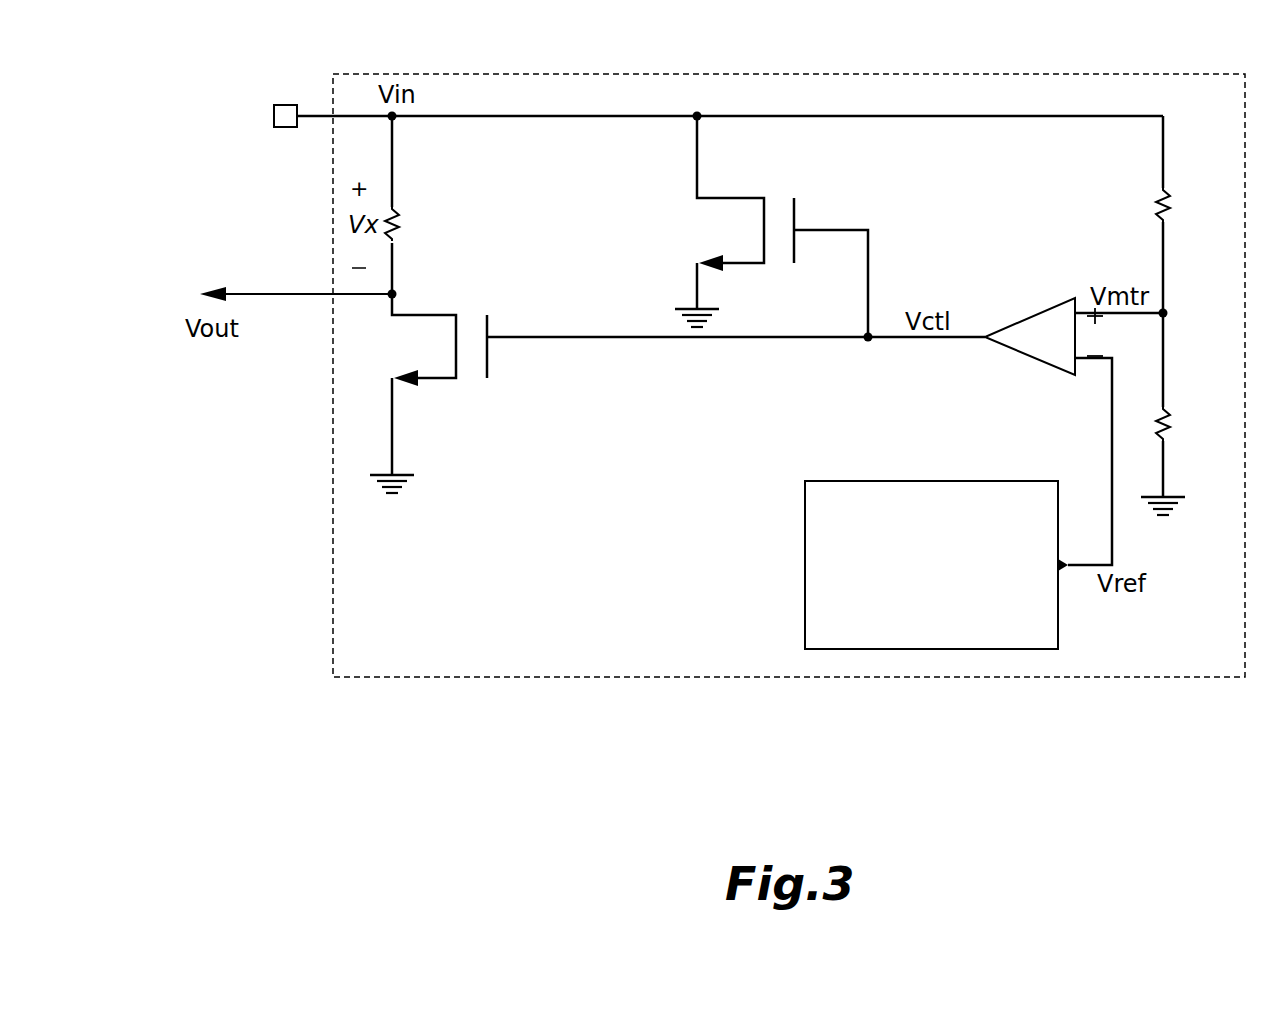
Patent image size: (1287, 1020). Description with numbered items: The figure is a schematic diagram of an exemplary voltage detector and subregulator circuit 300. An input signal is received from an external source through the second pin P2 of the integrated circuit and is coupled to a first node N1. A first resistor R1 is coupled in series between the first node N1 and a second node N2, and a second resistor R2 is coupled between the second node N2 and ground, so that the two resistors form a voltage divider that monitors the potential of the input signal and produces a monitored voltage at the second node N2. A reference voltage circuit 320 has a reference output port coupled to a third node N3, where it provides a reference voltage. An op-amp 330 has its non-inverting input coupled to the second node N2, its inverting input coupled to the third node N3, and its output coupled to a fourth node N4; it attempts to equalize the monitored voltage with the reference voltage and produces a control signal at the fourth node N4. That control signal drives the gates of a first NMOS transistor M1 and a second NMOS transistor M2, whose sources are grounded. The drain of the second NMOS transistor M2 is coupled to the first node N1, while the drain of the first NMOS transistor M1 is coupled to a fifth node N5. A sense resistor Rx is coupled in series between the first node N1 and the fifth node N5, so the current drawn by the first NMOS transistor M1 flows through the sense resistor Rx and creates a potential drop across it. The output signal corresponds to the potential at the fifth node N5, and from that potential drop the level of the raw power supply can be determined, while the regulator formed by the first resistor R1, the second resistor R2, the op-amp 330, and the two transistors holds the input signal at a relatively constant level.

The voltage detector and subregulator (VDSR) circuit 300 is at (791, 66).
The second pin P2 is at (287, 96).
The sense resistor Rx is at (400, 201).
The first node N1 is at (543, 122).
The fifth node N5 is at (358, 302).
The first NMOS transistor M1 is at (496, 292).
The second NMOS transistor M2 is at (797, 196).
The fourth node N4 is at (782, 344).
The op-amp 330 is at (1040, 298).
The third node N3 is at (1106, 436).
The first resistor R1 is at (1166, 190).
The second resistor R2 is at (1166, 400).
The second node N2 is at (1170, 313).
The reference voltage circuit 320 is at (935, 475).